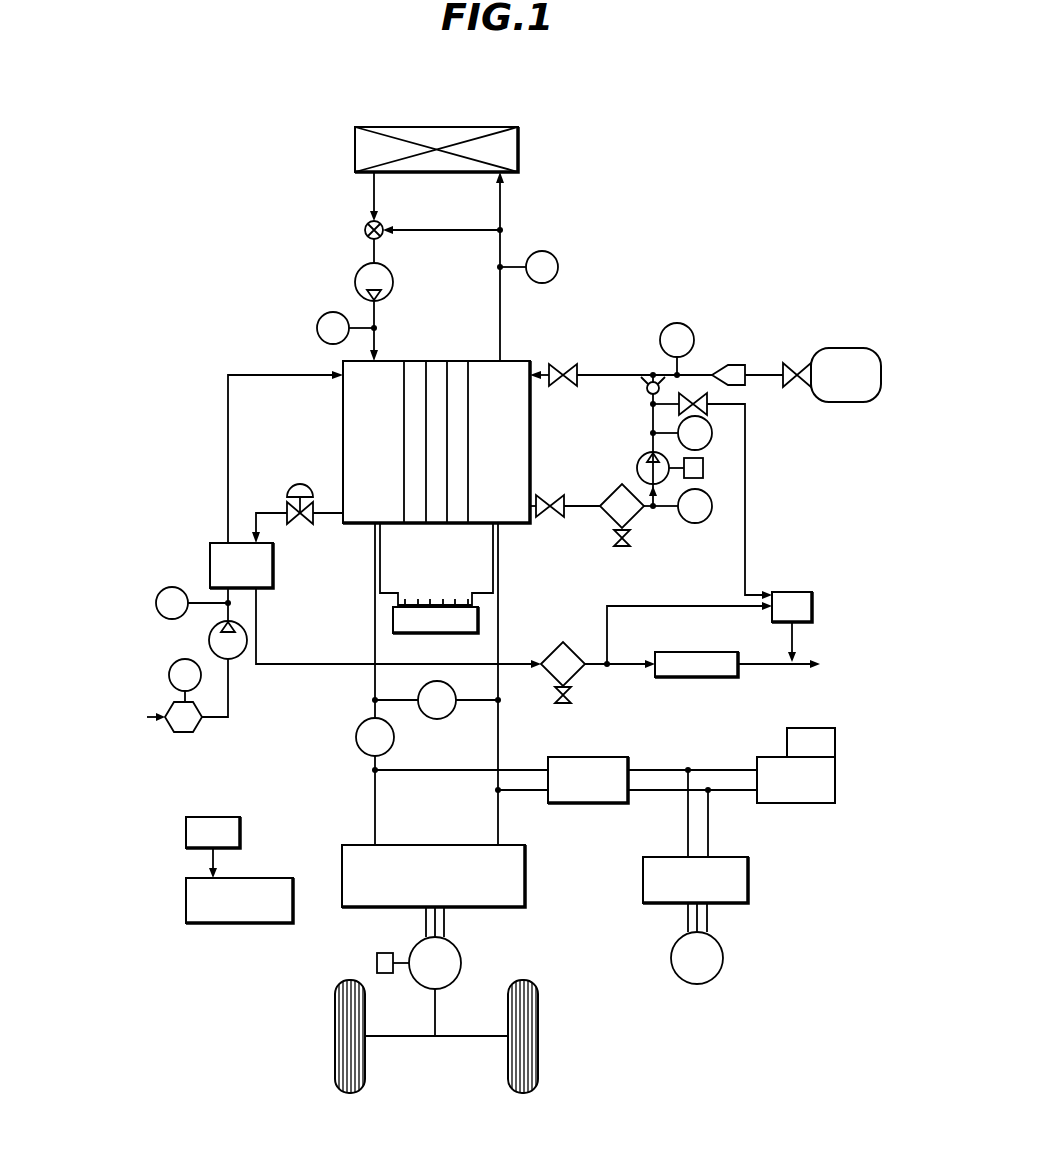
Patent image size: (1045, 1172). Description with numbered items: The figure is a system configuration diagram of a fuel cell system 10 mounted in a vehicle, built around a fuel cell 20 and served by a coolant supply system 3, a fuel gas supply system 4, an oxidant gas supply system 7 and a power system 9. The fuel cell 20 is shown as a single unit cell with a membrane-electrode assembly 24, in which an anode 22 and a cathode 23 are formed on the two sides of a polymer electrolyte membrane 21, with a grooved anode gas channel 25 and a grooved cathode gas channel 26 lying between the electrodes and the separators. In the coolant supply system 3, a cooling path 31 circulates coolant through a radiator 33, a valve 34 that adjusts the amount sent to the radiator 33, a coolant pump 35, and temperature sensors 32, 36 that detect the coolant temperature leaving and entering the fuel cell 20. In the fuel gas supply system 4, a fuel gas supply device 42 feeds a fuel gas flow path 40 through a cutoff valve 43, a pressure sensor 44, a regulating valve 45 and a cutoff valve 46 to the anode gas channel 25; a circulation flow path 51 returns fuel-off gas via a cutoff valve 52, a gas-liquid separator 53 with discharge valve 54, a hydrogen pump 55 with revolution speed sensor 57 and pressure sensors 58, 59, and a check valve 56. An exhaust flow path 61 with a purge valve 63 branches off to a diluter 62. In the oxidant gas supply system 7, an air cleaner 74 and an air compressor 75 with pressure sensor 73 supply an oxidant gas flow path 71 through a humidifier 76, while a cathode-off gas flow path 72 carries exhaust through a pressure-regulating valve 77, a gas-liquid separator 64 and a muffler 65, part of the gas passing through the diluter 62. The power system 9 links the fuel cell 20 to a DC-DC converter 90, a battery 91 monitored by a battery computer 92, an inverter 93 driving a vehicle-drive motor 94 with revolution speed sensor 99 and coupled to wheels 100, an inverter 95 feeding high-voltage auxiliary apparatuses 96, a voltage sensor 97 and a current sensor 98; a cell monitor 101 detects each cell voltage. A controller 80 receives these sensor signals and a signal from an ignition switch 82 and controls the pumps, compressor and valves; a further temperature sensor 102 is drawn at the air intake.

The fuel cell system 10 is at (697, 177).
The coolant supply system 3 is at (430, 287).
The fuel gas supply system 4 is at (545, 427).
The oxidant gas supply system 7 is at (247, 417).
The power system 9 is at (427, 822).
The fuel cell 20 is at (436, 361).
The polymer electrolyte membrane 21 is at (437, 525).
The anode 22 is at (458, 525).
The cathode 23 is at (415, 525).
The membrane-electrode assembly 24 is at (480, 568).
The anode gas channel 25 is at (514, 525).
The cathode gas channel 26 is at (358, 525).
The cooling path 31 is at (501, 315).
The temperature sensor 32 is at (548, 252).
The radiator 33 is at (520, 158).
The valve 34 is at (366, 224).
The coolant pump 35 is at (356, 278).
The temperature sensor 36 is at (320, 318).
The fuel gas flow path 40 is at (618, 375).
The fuel gas supply device 42 is at (838, 348).
The cutoff valve 43 is at (790, 362).
The pressure sensor 44 is at (665, 328).
The regulating valve 45 is at (728, 365).
The cutoff valve 46 is at (560, 363).
The circulation flow path 51 is at (580, 506).
The cutoff valve 52 is at (552, 495).
The gas-liquid separator 53 is at (612, 494).
The discharge valve 54 is at (625, 548).
The hydrogen pump 55 is at (642, 458).
The check valve 56 is at (645, 390).
The revolution speed sensor 57 is at (703, 472).
The pressure sensor 58 is at (692, 523).
The pressure sensor 59 is at (712, 433).
The exhaust flow path 61 is at (745, 470).
The diluter 62 is at (795, 592).
The purge valve 63 is at (708, 400).
The gas-liquid separator 64 is at (575, 680).
The muffler 65 is at (712, 677).
The oxidant gas flow path 71 is at (245, 375).
The cathode-off gas flow path 72 is at (311, 502).
The pressure sensor 73 is at (168, 587).
The air cleaner 74 is at (185, 733).
The air compressor 75 is at (232, 660).
The humidifier 76 is at (218, 543).
The pressure-regulating valve 77 is at (296, 483).
The controller 80 is at (260, 878).
The ignition switch 82 is at (240, 830).
The DC-DC converter 90 is at (560, 757).
The battery 91 is at (765, 757).
The battery computer 92 is at (822, 728).
The inverter 93 is at (527, 880).
The vehicle-drive motor 94 is at (460, 965).
The inverter 95 is at (750, 885).
The high-voltage auxiliary apparatus 96 is at (722, 962).
The voltage sensor 97 is at (444, 718).
The current sensor 98 is at (394, 740).
The revolution speed sensor 99 is at (377, 963).
The wheels 100 is at (540, 1008).
The cell monitor 101 is at (440, 633).
The temperature sensor 102 is at (172, 664).